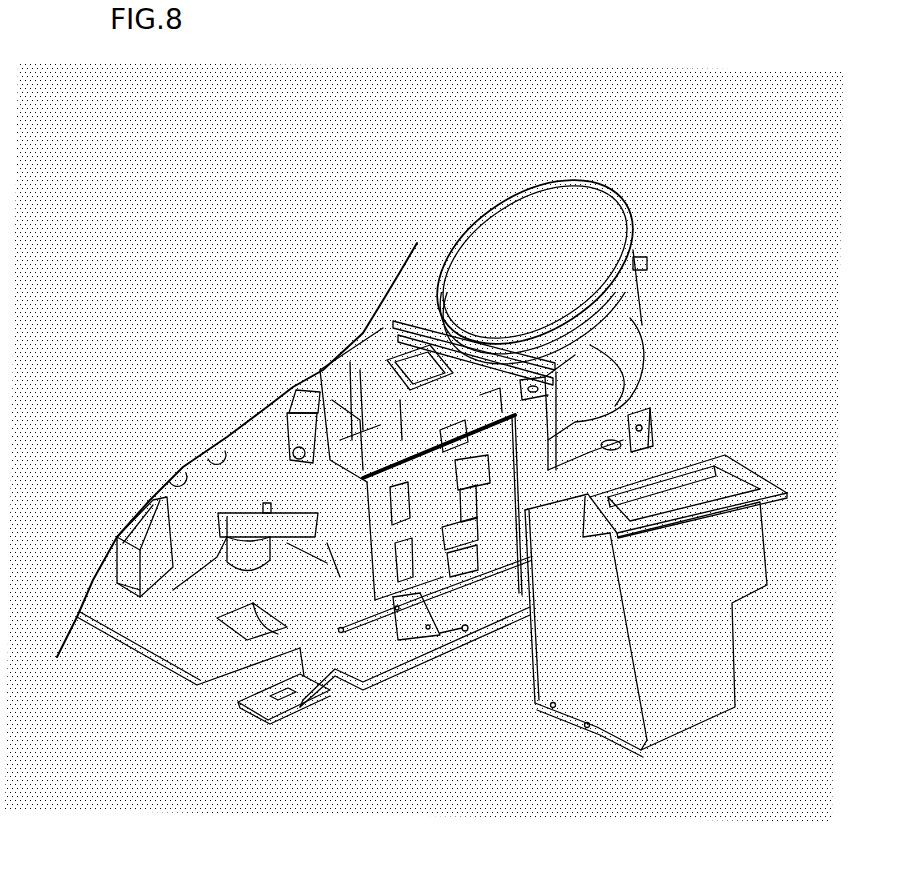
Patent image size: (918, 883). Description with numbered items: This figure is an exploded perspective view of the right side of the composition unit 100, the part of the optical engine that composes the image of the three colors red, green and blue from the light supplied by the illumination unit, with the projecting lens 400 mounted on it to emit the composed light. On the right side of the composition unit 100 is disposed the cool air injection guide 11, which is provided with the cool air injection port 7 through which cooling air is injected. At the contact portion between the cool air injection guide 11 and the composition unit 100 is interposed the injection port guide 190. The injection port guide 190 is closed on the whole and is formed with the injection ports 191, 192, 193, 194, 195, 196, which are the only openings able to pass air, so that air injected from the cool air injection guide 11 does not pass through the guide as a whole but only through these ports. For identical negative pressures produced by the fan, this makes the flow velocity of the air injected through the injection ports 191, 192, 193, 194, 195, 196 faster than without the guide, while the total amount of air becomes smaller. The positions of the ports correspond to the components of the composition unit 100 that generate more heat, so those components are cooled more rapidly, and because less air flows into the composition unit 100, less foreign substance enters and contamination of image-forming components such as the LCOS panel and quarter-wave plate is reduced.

The composition unit 100 is at (425, 268).
The projecting lens 400 is at (562, 222).
The injection port guide 190 is at (240, 688).
The injection port 191 is at (602, 392).
The injection port 192 is at (642, 440).
The injection port 193 is at (470, 503).
The injection port 194 is at (460, 540).
The injection port 195 is at (468, 562).
The injection port 196 is at (410, 522).
The cool air injection port 7 is at (708, 480).
The cool air injection guide 11 is at (684, 695).